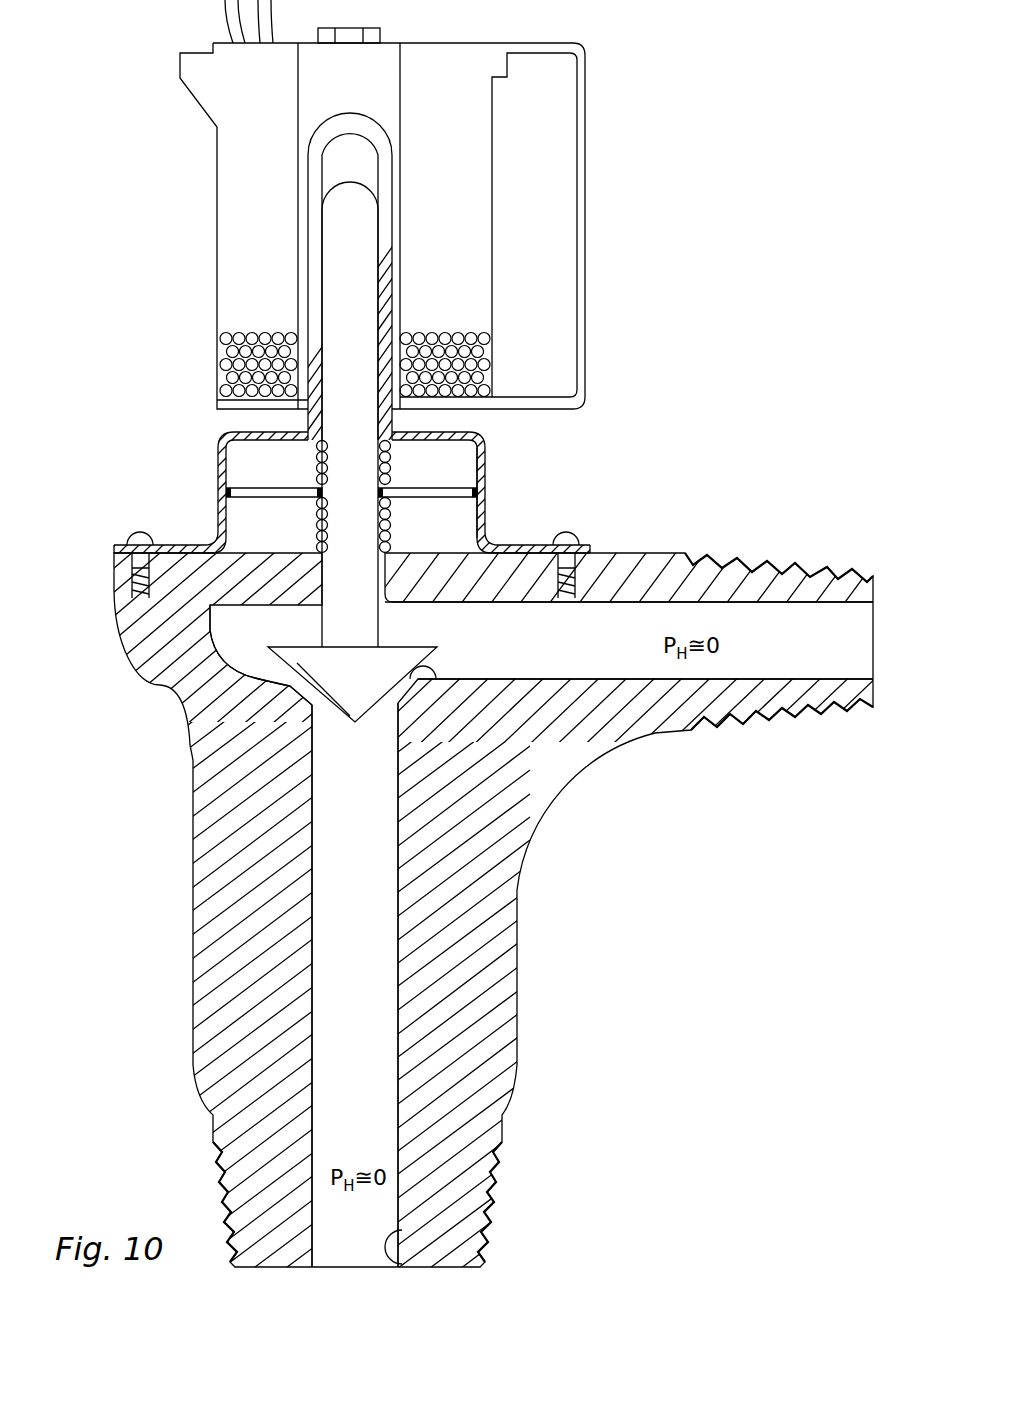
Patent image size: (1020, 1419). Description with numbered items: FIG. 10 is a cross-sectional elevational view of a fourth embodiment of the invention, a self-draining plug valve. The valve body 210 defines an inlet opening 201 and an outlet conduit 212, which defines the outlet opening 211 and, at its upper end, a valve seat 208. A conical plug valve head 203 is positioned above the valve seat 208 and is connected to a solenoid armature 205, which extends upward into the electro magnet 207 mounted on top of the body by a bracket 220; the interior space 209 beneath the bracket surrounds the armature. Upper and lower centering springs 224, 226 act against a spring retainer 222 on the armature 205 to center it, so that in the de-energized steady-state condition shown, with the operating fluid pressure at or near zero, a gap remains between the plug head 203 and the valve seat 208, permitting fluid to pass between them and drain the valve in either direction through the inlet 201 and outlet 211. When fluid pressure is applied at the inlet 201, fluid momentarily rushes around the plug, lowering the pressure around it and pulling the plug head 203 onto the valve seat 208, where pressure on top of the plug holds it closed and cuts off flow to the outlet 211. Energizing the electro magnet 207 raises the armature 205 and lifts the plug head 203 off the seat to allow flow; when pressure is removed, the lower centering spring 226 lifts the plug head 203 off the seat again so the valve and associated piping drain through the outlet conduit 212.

The inlet opening 201 is at (833, 632).
The plug valve head 203 is at (295, 663).
The solenoid armature 205 is at (377, 930).
The electro magnet 207 is at (560, 210).
The valve seat 208 is at (436, 680).
The space beneath bracket 209 is at (458, 517).
The valve body 210 is at (193, 912).
The outlet opening 211 is at (390, 1264).
The outlet conduit 212 is at (223, 1187).
The mounting bracket 220 is at (222, 453).
The spring retainer 222 is at (232, 495).
The upper centering spring 224 is at (318, 453).
The lower centering spring 226 is at (393, 522).